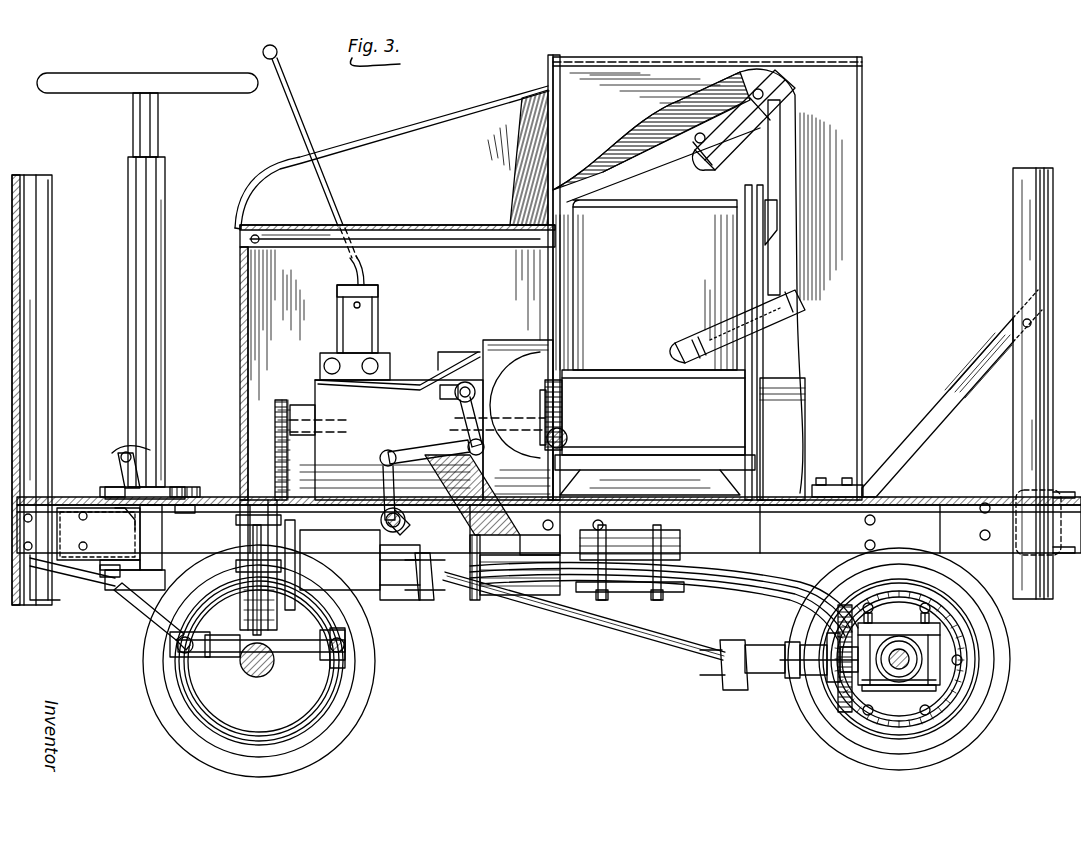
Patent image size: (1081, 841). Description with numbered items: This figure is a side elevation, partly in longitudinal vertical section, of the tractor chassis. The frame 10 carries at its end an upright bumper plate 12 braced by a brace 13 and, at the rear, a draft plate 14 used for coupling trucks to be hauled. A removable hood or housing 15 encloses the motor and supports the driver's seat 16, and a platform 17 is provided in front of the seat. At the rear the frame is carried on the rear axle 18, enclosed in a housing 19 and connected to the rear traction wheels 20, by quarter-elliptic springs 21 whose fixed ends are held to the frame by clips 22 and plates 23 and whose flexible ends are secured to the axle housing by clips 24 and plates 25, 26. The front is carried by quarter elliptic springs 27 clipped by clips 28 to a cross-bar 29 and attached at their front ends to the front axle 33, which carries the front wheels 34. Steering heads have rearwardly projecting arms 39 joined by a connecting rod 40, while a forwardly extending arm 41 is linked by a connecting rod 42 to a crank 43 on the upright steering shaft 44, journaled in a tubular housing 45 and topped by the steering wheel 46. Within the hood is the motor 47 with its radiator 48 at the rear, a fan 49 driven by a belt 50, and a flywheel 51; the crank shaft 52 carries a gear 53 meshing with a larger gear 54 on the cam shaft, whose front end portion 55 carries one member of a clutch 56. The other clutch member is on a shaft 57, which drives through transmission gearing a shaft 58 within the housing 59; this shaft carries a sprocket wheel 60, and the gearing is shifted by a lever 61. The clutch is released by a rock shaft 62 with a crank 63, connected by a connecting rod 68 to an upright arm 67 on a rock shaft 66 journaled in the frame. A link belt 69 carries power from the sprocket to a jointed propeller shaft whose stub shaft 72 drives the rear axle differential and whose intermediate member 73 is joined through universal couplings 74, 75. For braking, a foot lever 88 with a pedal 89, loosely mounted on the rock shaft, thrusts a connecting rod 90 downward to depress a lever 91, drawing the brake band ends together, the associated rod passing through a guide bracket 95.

The frame 10 is at (898, 520).
The bumper plate 12 is at (1034, 396).
The brace 13 is at (962, 378).
The draft plate 14 is at (1060, 490).
The hood or housing 15 is at (592, 102).
The driver's seat 16 is at (458, 170).
The platform 17 is at (75, 500).
The rear axle 18 is at (897, 685).
The rear axle housing 19 is at (900, 682).
The rear traction wheels 20 is at (995, 640).
The quarter-elliptic springs 21 is at (745, 590).
The clips 22 is at (600, 548).
The plates 23 is at (680, 592).
The clips 24 is at (872, 605).
The plate 25 is at (940, 635).
The plate 26 is at (930, 685).
The quarter elliptic springs 27 is at (497, 592).
The clips 28 is at (530, 596).
The cross-bar 29 is at (540, 575).
The front axle 33 is at (257, 678).
The front wheels 34 is at (228, 728).
The rearwardly projecting arms 39 is at (306, 652).
The connecting rod 40 is at (346, 652).
The forwardly extending arm 41 is at (190, 648).
The connecting rod 42 is at (145, 612).
The crank 43 is at (112, 590).
The steering shaft 44 is at (140, 544).
The tubular housing 45 is at (128, 236).
The steering wheel 46 is at (110, 94).
The motor 47 is at (595, 235).
The radiator 48 is at (770, 145).
The fan 49 is at (778, 175).
The belt 50 is at (757, 298).
The flywheel 51 is at (806, 380).
The crank shaft 52 is at (568, 446).
The gear 53 is at (552, 432).
The gear 54 is at (562, 388).
The cam shaft front end portion 55 is at (560, 420).
The clutch 56 is at (515, 395).
The shaft 57 is at (480, 500).
The shaft 58 is at (337, 420).
The housing 59 is at (406, 395).
The sprocket wheel 60 is at (296, 405).
The lever 61 is at (310, 136).
The rock shaft 62 is at (466, 382).
The crank 63 is at (445, 398).
The rock shaft 66 is at (393, 533).
The upright arm 67 is at (380, 456).
The connecting rod 68 is at (435, 468).
The link belt 69 is at (276, 452).
The stub shaft 72 is at (788, 668).
The intermediate member 73 is at (655, 632).
The universal coupling 74 is at (428, 605).
The universal coupling 75 is at (722, 690).
The foot lever 88 is at (200, 512).
The pedal 89 is at (108, 440).
The connecting rod 90 is at (242, 545).
The lever 91 is at (240, 650).
The guide bracket 95 is at (253, 590).